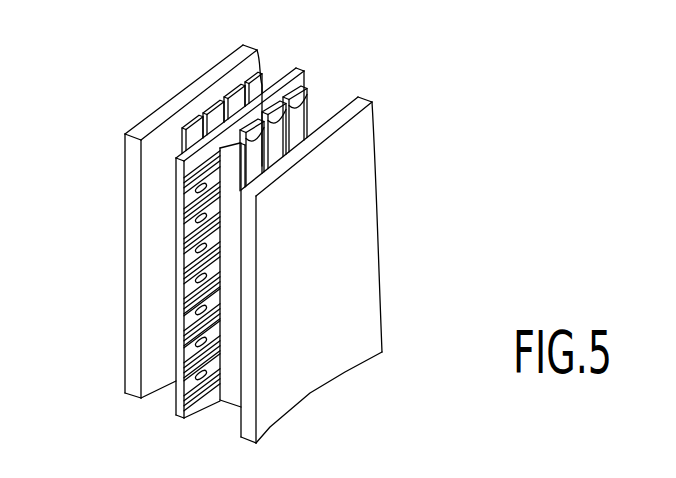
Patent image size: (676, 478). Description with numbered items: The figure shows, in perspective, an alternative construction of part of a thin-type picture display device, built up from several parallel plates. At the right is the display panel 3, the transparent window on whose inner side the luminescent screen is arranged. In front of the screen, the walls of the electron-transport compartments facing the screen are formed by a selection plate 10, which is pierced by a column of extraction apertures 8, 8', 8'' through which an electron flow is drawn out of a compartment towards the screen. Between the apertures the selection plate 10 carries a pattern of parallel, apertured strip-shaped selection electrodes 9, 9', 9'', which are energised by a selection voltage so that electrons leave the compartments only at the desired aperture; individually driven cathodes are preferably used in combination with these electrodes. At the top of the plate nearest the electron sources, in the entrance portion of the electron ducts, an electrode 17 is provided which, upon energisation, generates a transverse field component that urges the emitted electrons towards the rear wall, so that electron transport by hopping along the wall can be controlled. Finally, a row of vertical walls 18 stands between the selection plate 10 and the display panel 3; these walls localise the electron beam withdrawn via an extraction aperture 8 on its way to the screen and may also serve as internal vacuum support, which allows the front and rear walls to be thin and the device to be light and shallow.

The display panel 3 is at (358, 97).
The extraction aperture 8 is at (145, 159).
The extraction aperture 8' is at (145, 199).
The extraction aperture 8'' is at (145, 257).
The selection electrode 9 is at (138, 187).
The selection electrode 9' is at (138, 229).
The selection electrode 9'' is at (138, 278).
The selection plate 10 is at (177, 331).
The electrode 17 is at (212, 111).
The vertical wall 18 is at (255, 147).